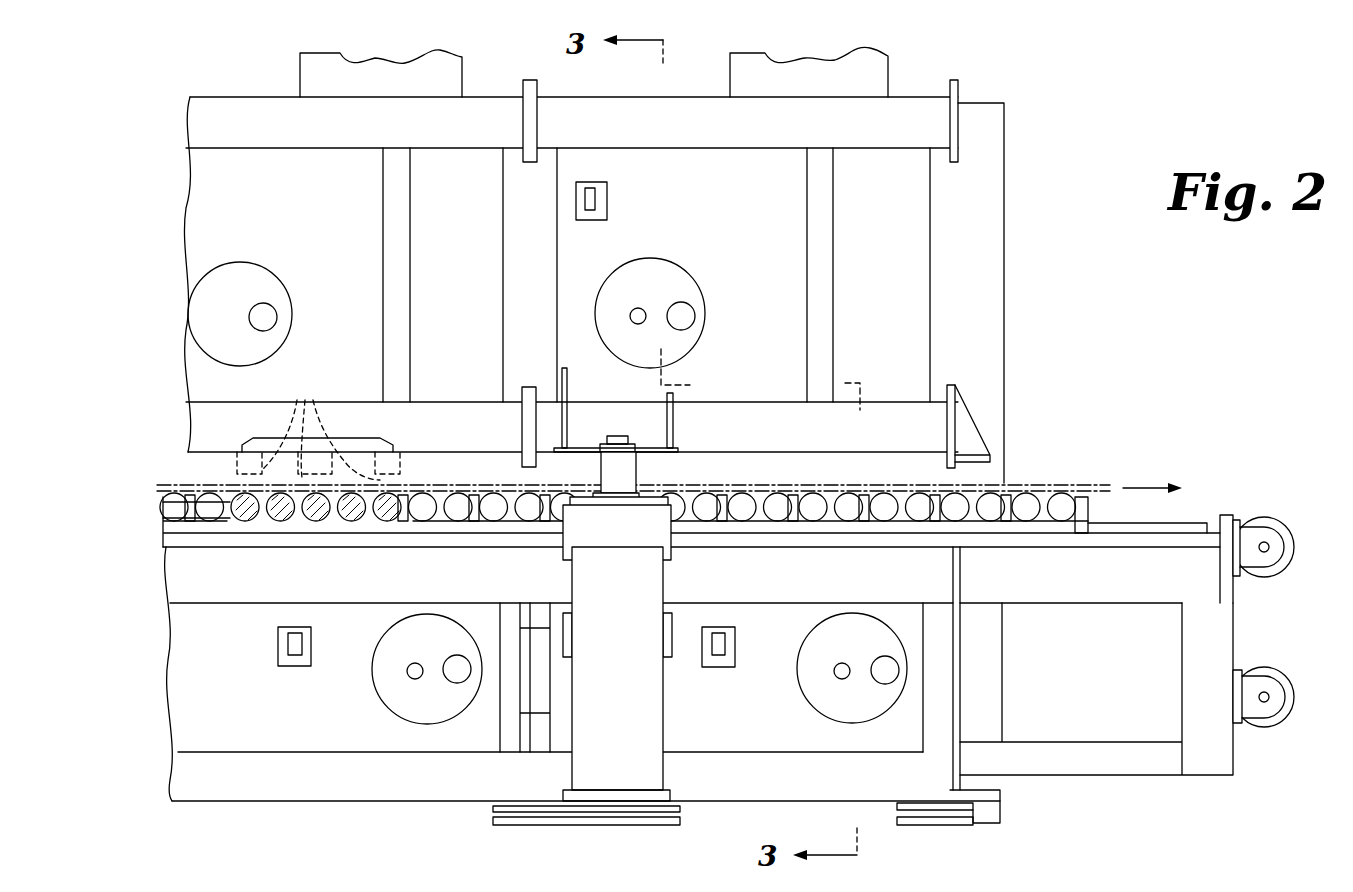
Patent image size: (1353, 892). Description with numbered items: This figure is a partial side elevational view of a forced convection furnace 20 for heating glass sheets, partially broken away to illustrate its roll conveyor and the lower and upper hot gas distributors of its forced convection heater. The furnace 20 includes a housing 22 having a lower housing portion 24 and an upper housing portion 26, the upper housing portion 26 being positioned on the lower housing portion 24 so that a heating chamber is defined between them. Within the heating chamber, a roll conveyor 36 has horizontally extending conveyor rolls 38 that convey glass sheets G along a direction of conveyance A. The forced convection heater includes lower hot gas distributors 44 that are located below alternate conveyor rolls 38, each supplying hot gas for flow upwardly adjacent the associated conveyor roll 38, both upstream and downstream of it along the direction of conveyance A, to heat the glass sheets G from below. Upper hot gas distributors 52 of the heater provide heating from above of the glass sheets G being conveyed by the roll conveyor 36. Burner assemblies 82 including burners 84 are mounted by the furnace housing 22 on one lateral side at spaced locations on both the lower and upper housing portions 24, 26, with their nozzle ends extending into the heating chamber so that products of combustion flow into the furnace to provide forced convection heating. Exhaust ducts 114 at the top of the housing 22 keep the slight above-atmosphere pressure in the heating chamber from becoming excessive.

The forced convection furnace 20 is at (979, 71).
The housing 22 is at (961, 101).
The lower housing portion 24 is at (1267, 612).
The upper housing portion 26 is at (1013, 318).
The roll conveyor 36 is at (163, 497).
The conveyor rolls 38 is at (245, 521).
The lower hot gas distributors 44 is at (283, 522).
The upper hot gas distributors 52 is at (313, 400).
The burner assemblies 82 is at (243, 252).
The burners 84 is at (263, 283).
The exhaust ducts 114 is at (300, 75).
The glass sheets G is at (1032, 485).
The direction of conveyance A is at (1143, 490).